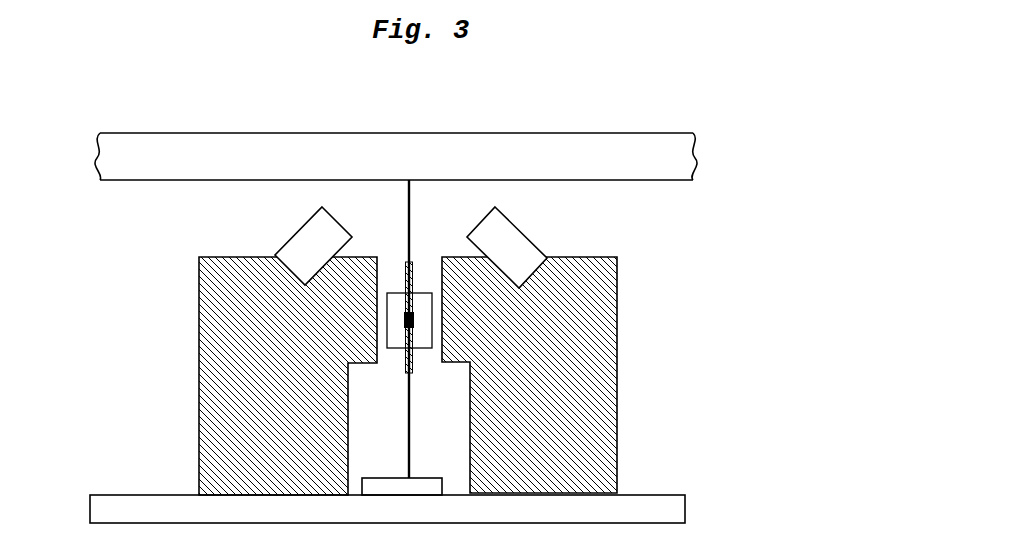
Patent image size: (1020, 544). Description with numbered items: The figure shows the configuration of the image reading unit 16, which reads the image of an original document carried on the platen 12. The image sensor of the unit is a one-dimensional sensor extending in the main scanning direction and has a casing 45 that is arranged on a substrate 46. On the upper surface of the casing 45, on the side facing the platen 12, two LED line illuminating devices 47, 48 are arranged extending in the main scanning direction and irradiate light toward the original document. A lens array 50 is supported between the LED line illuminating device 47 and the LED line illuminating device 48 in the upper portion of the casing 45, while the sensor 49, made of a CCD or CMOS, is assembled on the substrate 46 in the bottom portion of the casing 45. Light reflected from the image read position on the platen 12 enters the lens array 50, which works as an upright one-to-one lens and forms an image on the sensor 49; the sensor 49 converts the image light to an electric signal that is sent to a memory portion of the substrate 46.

The platen 12 is at (527, 133).
The image reading unit 16 is at (431, 337).
The casing 45 is at (218, 426).
The substrate 46 is at (684, 503).
The LED line illuminating device 47 is at (288, 238).
The LED line illuminating device 48 is at (513, 242).
The sensor 49 is at (420, 478).
The lens array 50 is at (394, 310).